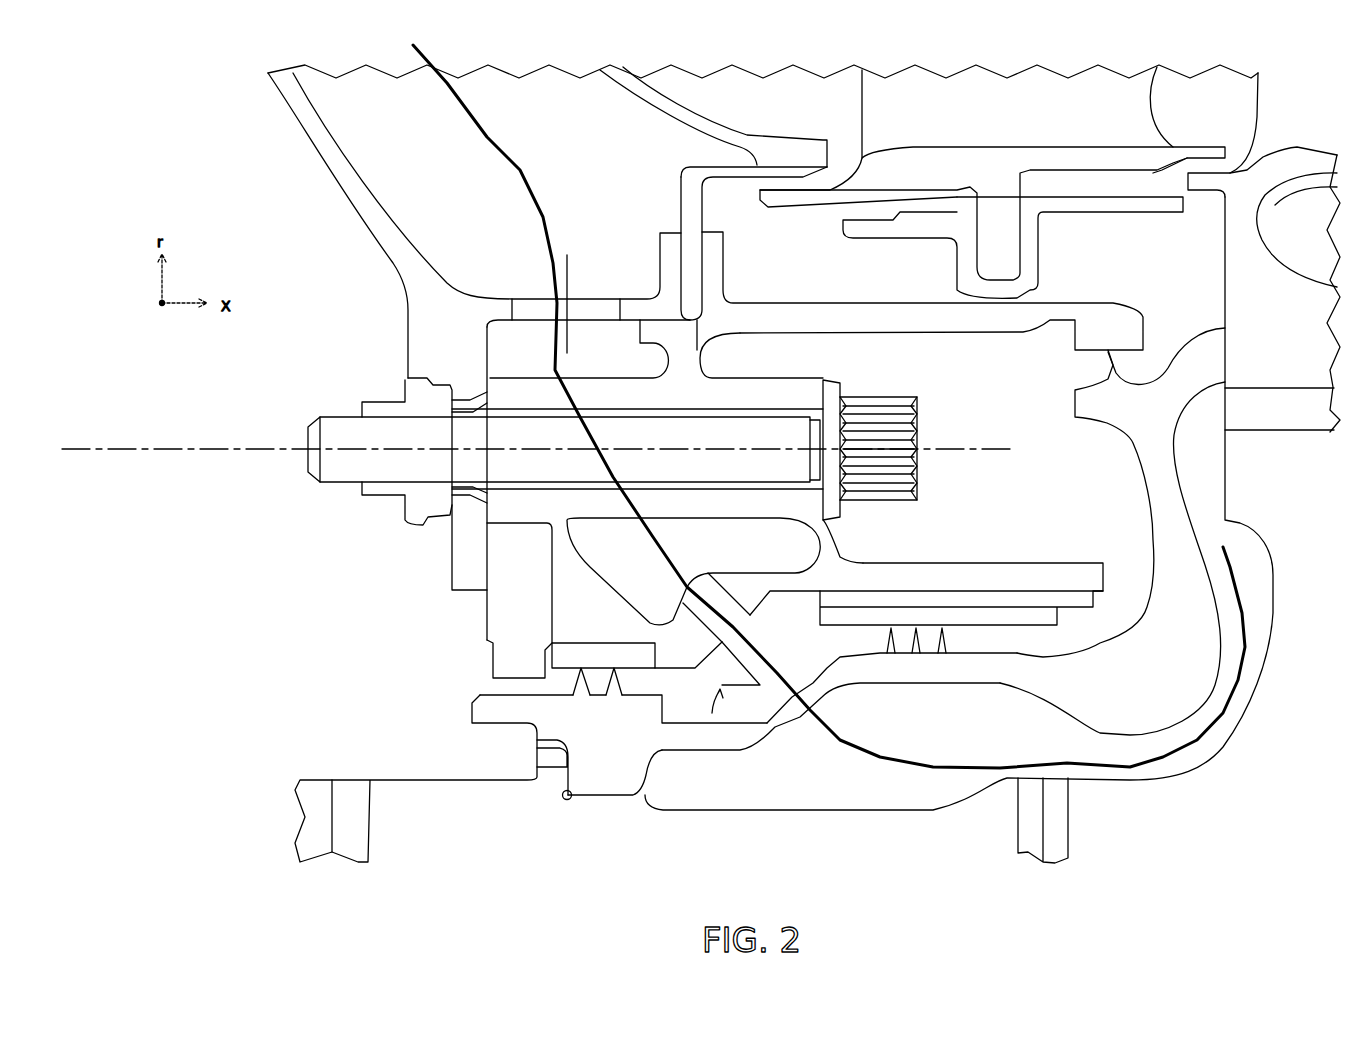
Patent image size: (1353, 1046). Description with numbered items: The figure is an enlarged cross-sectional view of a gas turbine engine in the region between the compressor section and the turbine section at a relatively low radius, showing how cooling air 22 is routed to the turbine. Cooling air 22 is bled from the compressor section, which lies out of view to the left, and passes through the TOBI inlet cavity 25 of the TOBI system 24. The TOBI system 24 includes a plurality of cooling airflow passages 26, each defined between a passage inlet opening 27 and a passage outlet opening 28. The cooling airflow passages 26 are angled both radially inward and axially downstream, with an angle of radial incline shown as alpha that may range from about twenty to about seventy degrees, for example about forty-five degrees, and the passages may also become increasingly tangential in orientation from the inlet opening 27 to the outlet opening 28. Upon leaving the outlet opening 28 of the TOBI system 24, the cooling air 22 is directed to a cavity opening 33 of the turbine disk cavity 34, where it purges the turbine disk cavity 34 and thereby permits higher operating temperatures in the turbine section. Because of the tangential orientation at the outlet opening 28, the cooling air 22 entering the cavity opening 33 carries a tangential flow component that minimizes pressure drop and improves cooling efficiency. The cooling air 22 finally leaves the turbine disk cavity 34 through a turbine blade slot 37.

The cooling air 22 is at (520, 163).
The TOBI system 24 is at (793, 371).
The TOBI inlet cavity 25 is at (650, 574).
The cooling airflow passages 26 is at (772, 656).
The passage inlet opening 27 is at (693, 568).
The passage outlet opening 28 is at (745, 630).
The cavity opening 33 is at (807, 736).
The turbine disk cavity 34 is at (882, 800).
The turbine blade slot 37 is at (1292, 421).